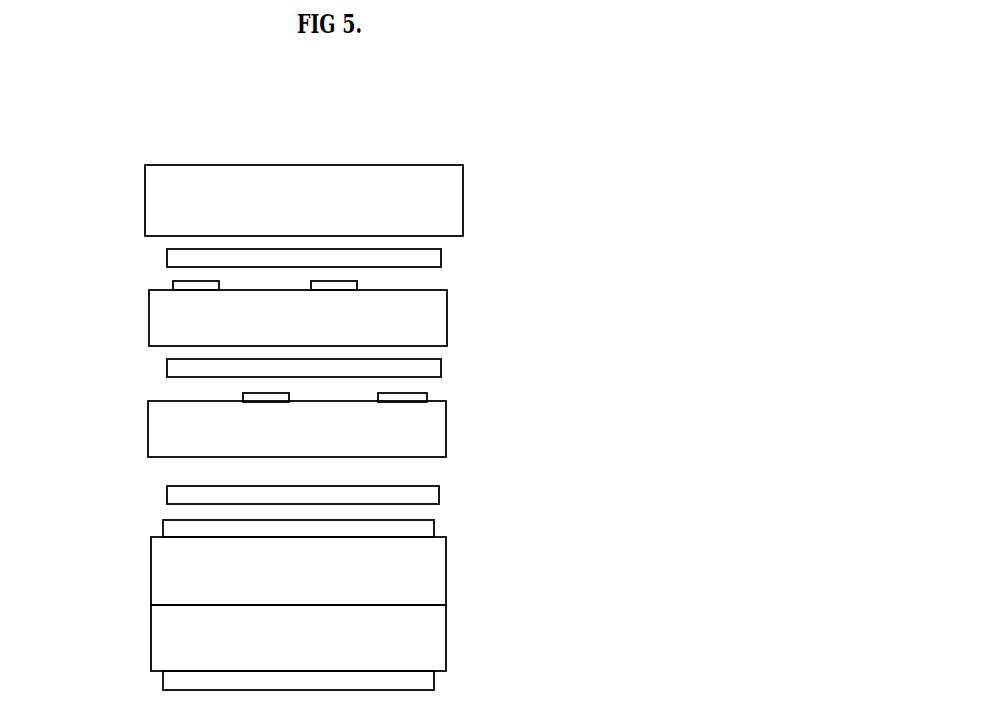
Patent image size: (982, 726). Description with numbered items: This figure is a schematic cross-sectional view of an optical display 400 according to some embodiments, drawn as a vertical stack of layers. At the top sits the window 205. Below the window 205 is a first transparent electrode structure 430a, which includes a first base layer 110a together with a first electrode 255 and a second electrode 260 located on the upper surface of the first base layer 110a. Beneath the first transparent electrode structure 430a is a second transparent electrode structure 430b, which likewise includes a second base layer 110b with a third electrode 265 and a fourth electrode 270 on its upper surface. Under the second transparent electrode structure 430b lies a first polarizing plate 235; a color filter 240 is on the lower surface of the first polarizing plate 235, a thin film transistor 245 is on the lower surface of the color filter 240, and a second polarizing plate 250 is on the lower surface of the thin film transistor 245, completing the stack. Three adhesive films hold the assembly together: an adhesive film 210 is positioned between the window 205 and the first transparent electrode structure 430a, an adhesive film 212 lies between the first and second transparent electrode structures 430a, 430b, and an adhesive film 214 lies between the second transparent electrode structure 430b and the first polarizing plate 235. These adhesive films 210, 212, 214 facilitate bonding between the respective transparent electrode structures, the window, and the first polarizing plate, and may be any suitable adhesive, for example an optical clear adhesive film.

The optical display 400 is at (508, 152).
The window 205 is at (463, 200).
The adhesive film 210 is at (441, 258).
The first electrode 255 is at (173, 287).
The second electrode 260 is at (357, 288).
The first base layer 110a is at (162, 320).
The first transparent electrode structure 430a is at (305, 297).
The adhesive film 212 is at (441, 368).
The third electrode 265 is at (243, 398).
The fourth electrode 270 is at (427, 398).
The second base layer 110b is at (162, 434).
The second transparent electrode structure 430b is at (298, 413).
The adhesive film 214 is at (439, 495).
The first polarizing plate 235 is at (434, 528).
The color filter 240 is at (446, 575).
The thin film transistor 245 is at (446, 630).
The second polarizing plate 250 is at (434, 680).